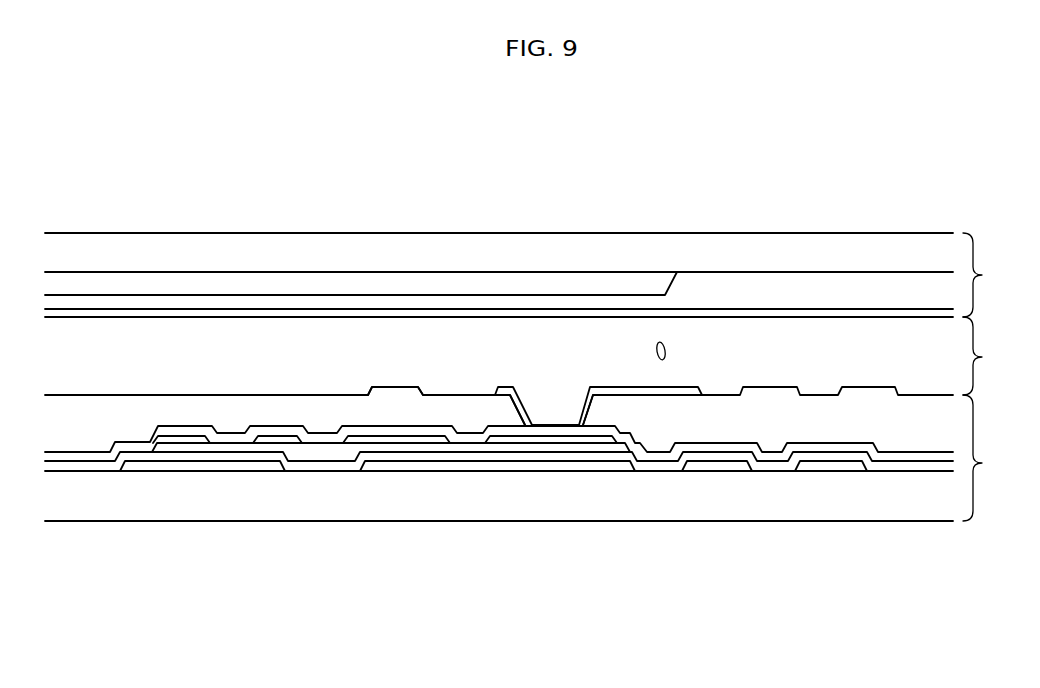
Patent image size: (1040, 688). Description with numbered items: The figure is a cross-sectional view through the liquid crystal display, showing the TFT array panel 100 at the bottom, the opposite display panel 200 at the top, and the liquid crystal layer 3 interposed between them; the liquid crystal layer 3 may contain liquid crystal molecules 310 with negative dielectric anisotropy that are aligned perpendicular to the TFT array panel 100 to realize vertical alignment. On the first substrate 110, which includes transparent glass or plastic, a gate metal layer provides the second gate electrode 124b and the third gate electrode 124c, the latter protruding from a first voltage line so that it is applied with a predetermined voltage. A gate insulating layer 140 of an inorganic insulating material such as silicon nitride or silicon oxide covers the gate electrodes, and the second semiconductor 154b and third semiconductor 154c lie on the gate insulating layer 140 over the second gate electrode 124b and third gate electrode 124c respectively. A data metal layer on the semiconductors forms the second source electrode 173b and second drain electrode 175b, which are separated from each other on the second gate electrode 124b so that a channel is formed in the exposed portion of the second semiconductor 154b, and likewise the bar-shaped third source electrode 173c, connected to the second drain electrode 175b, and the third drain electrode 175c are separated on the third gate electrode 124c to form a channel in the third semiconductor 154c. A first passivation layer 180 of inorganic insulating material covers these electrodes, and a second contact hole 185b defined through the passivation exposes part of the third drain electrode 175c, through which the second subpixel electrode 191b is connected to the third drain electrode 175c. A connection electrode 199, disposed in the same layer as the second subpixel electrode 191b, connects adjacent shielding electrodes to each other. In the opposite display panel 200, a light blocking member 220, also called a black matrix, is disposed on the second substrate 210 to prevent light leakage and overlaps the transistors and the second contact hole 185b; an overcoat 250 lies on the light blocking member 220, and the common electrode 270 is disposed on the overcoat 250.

The liquid crystal layer 3 is at (982, 356).
The TFT array panel 100 is at (995, 458).
The first substrate 110 is at (352, 510).
The gate insulating layer 140 is at (63, 472).
The second gate electrode 124b is at (170, 466).
The third gate electrode 124c is at (510, 466).
The second semiconductor 154b is at (247, 448).
The third semiconductor 154c is at (453, 450).
The second source electrode 173b is at (193, 440).
The third source electrode 173c is at (402, 441).
The second drain electrode 175b is at (278, 430).
The third drain electrode 175c is at (552, 440).
The first passivation layer 180 is at (102, 458).
The second contact hole 185b is at (580, 430).
The second subpixel electrode 191b is at (506, 386).
The connection electrode 199 is at (390, 386).
The opposite display panel 200 is at (995, 275).
The second substrate 210 is at (775, 240).
The light blocking member 220 is at (596, 283).
The overcoat 250 is at (705, 288).
The common electrode 270 is at (873, 312).
The liquid crystal molecule 310 is at (666, 352).